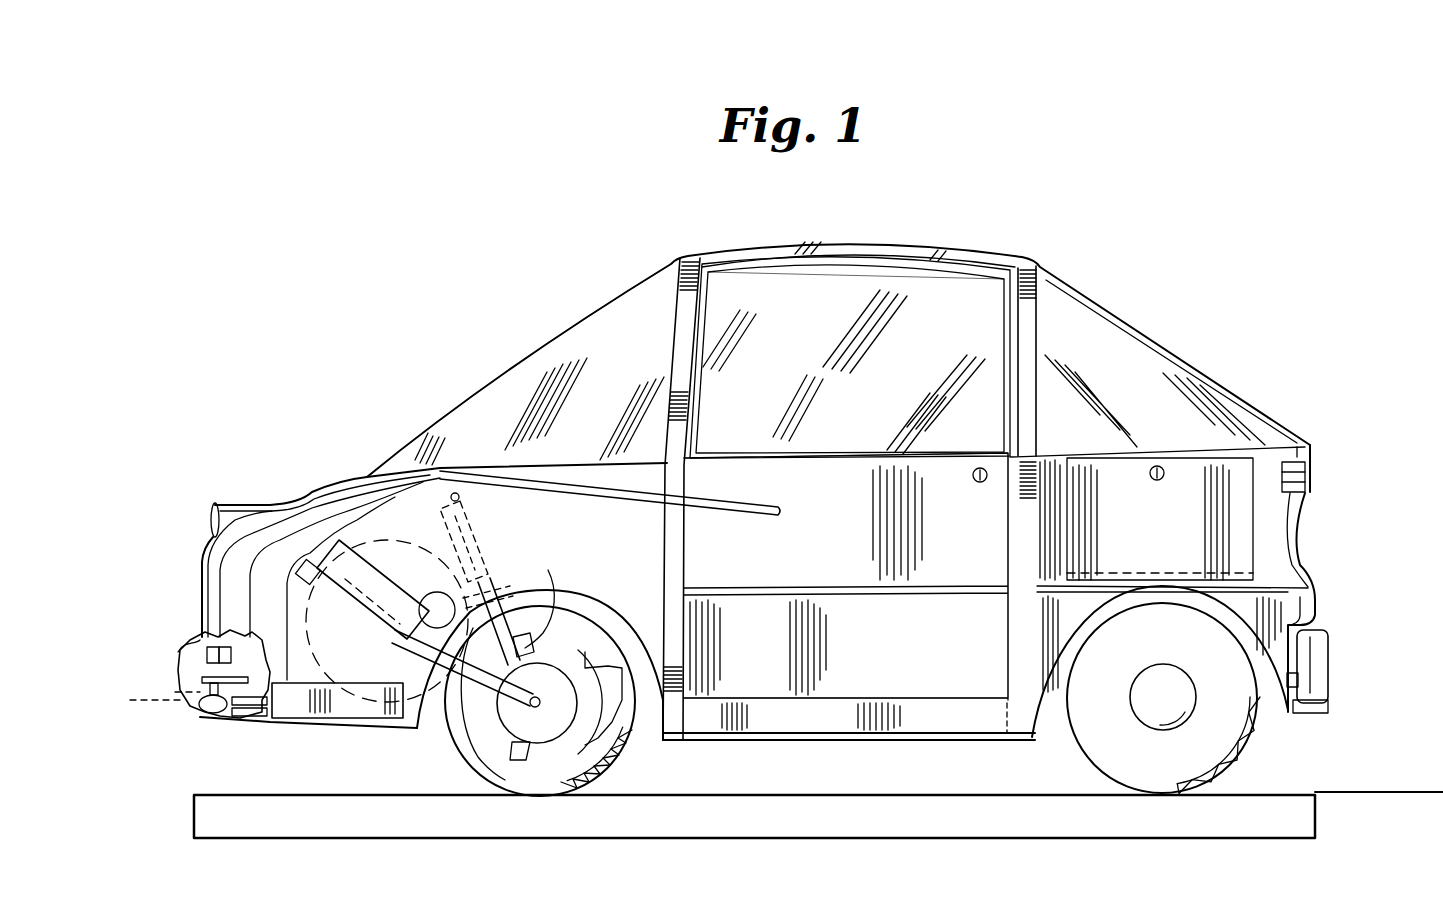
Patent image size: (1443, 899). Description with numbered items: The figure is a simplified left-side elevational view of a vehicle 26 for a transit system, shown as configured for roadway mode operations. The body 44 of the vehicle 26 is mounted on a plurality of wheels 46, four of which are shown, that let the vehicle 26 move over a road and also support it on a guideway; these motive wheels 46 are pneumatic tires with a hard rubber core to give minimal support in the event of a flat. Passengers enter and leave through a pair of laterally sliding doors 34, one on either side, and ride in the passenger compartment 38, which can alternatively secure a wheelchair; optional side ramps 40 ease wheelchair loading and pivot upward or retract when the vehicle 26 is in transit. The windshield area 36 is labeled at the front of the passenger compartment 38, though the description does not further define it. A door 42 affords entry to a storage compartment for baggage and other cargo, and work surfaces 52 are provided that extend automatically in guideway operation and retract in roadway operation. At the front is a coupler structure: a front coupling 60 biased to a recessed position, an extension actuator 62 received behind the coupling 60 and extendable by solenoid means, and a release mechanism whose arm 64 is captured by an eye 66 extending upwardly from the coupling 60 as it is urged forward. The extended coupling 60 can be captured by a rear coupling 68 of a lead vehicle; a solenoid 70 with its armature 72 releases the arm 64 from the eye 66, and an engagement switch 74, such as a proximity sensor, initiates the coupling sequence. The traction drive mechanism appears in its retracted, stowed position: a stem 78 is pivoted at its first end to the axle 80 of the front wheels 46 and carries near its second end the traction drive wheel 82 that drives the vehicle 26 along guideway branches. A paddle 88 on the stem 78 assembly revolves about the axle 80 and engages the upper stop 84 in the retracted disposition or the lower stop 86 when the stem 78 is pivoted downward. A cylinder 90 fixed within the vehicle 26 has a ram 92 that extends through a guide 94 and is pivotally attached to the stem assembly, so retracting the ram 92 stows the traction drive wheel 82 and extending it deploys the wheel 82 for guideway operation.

The vehicle 26 is at (1088, 276).
The laterally sliding doors 34 is at (785, 570).
The windshield 36 is at (628, 296).
The passenger compartment 38 is at (929, 304).
The side ramps 40 is at (925, 742).
The door 42 is at (1135, 540).
The body 44 is at (326, 489).
The wheels 46 is at (602, 764).
The work surfaces 52 is at (758, 503).
The front coupling 60 is at (210, 717).
The extension actuator 62 is at (262, 708).
The arm 64 is at (200, 681).
The eye 66 is at (227, 690).
The rear coupling 68 is at (1312, 713).
The solenoid 70 is at (207, 647).
The armature 72 is at (253, 633).
The engagement switch 74 is at (180, 652).
The stem 78 is at (412, 733).
The axle 80 is at (605, 735).
The traction drive wheel 82 is at (400, 537).
The upper stop 84 is at (556, 600).
The lower stop 86 is at (583, 773).
The paddle 88 is at (472, 730).
The cylinder 90 is at (446, 535).
The ram 92 is at (465, 716).
The guide 94 is at (506, 590).